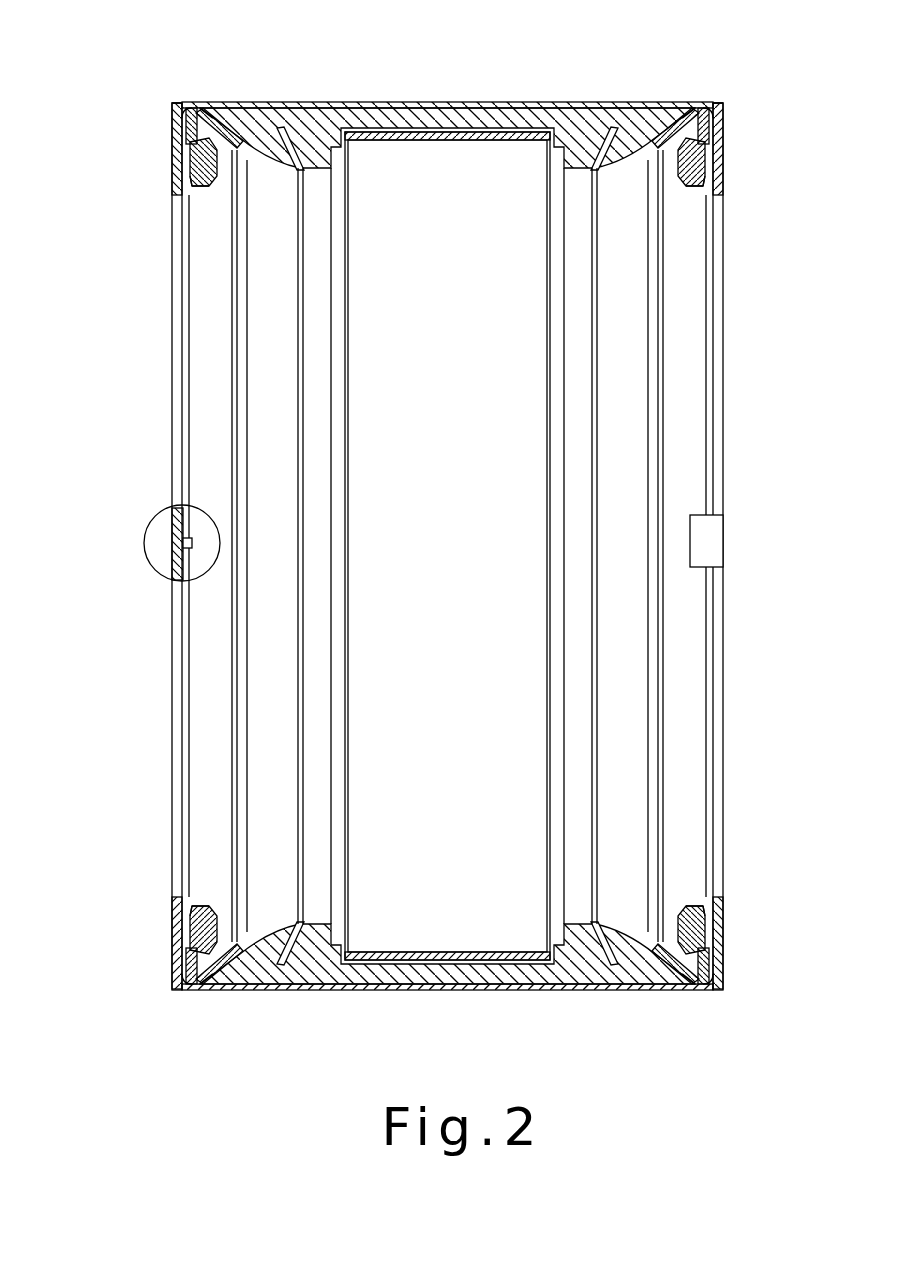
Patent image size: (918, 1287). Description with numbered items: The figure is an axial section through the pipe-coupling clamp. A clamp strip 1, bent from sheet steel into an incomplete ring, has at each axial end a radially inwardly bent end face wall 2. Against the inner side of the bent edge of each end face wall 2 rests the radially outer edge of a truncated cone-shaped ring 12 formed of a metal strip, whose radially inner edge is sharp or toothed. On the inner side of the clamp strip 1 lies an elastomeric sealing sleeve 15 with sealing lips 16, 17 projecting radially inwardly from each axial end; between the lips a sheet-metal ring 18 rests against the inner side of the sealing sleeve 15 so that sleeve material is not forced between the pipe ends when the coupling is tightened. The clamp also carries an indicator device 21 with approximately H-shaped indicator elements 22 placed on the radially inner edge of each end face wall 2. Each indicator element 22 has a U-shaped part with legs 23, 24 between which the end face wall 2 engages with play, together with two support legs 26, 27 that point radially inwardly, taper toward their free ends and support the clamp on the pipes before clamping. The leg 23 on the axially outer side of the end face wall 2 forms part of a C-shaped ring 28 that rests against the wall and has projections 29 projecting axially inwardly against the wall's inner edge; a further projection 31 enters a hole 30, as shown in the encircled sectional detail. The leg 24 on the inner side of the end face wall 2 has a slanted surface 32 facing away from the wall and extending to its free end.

The clamp strip 1 is at (531, 106).
The end face walls 2 is at (178, 104).
The truncated cone-shaped ring 12 is at (207, 377).
The sealing sleeve 15 is at (432, 118).
The sealing lip 16 is at (320, 293).
The sealing lip 17 is at (270, 332).
The ring 18 is at (473, 170).
The indicator device 21 is at (160, 437).
The indicator element 22 is at (160, 145).
The leg 23 is at (183, 112).
The leg 24 is at (697, 108).
The support leg 26 is at (190, 172).
The support leg 27 is at (200, 182).
The C-shaped ring 28 is at (182, 656).
The projections 29 is at (705, 548).
The hole 30 is at (173, 577).
The projection 31 is at (180, 537).
The slanted surface 32 is at (200, 112).